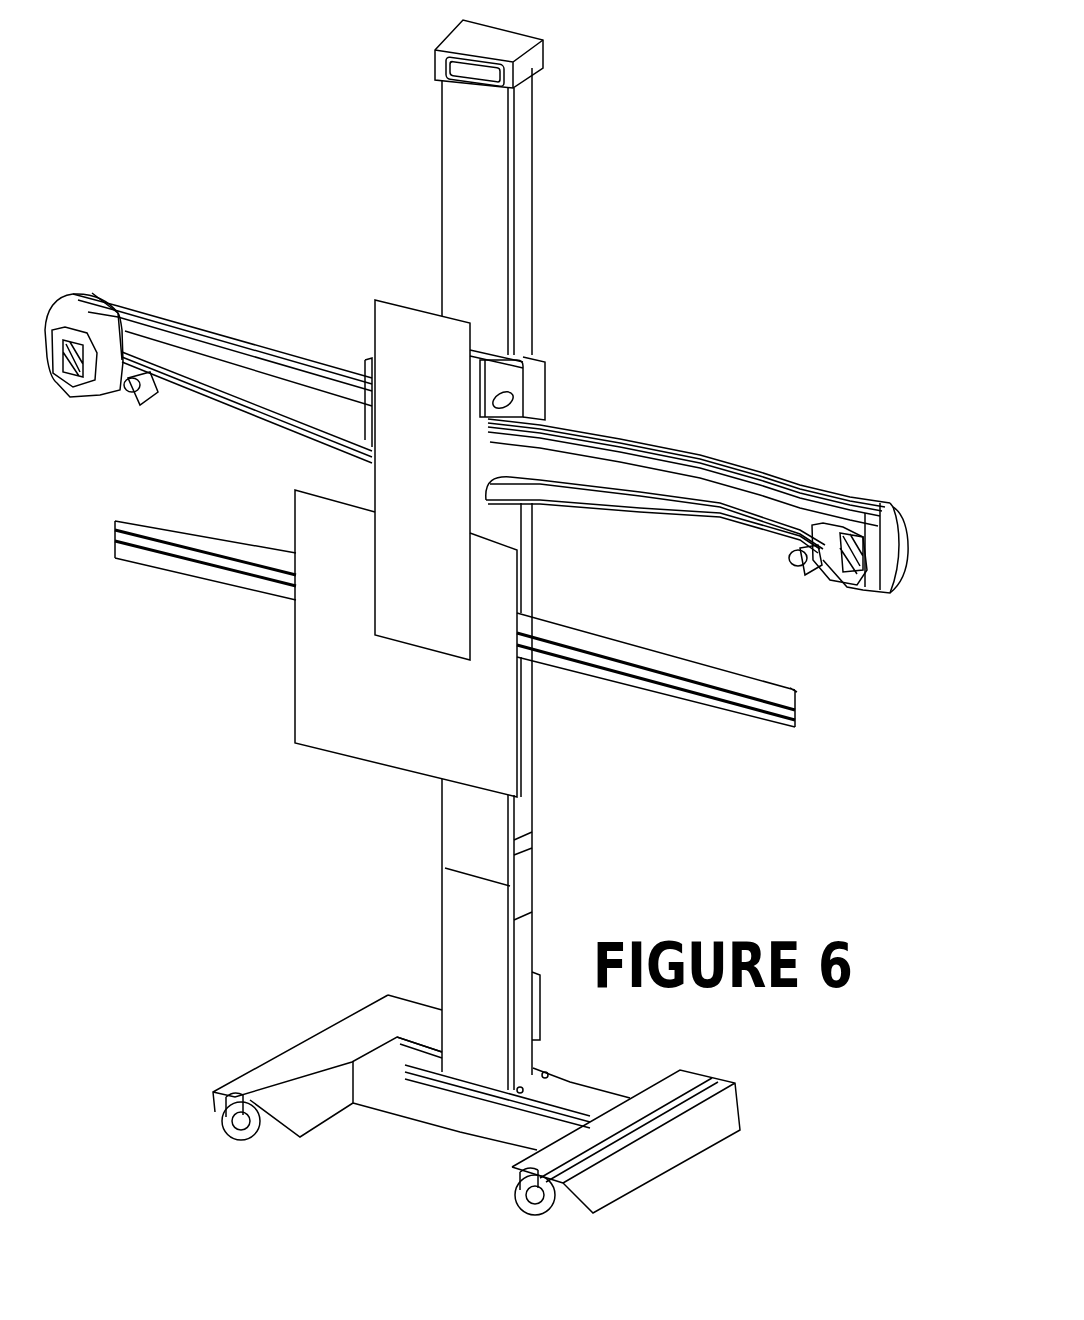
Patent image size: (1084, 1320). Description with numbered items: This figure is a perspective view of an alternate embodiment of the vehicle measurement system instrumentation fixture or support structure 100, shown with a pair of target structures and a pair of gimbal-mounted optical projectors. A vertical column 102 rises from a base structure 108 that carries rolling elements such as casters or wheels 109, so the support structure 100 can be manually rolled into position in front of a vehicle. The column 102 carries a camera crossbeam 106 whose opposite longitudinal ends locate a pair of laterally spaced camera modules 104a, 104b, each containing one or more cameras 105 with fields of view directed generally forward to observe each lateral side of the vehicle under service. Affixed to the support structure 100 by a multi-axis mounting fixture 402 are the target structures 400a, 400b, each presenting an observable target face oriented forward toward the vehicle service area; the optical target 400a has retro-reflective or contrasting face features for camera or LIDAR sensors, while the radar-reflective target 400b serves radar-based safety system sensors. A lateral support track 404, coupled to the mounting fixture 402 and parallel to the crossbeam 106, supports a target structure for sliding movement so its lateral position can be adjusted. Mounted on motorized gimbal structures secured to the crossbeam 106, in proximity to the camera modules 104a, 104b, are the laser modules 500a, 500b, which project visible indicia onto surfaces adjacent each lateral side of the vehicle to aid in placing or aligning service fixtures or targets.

The support structure 100 is at (583, 253).
The vertical column 102 is at (468, 208).
The camera module 104a is at (842, 523).
The camera module 104b is at (88, 322).
The camera 105 is at (80, 397).
The camera crossbeam 106 is at (612, 488).
The base structure 108 is at (333, 1068).
The caster 109 is at (220, 1125).
The target structure 400a is at (342, 667).
The target structure 400b is at (413, 543).
The mounting fixture 402 is at (503, 400).
The lateral support track 404 is at (602, 710).
The laser module 500a is at (785, 567).
The laser module 500b is at (147, 420).